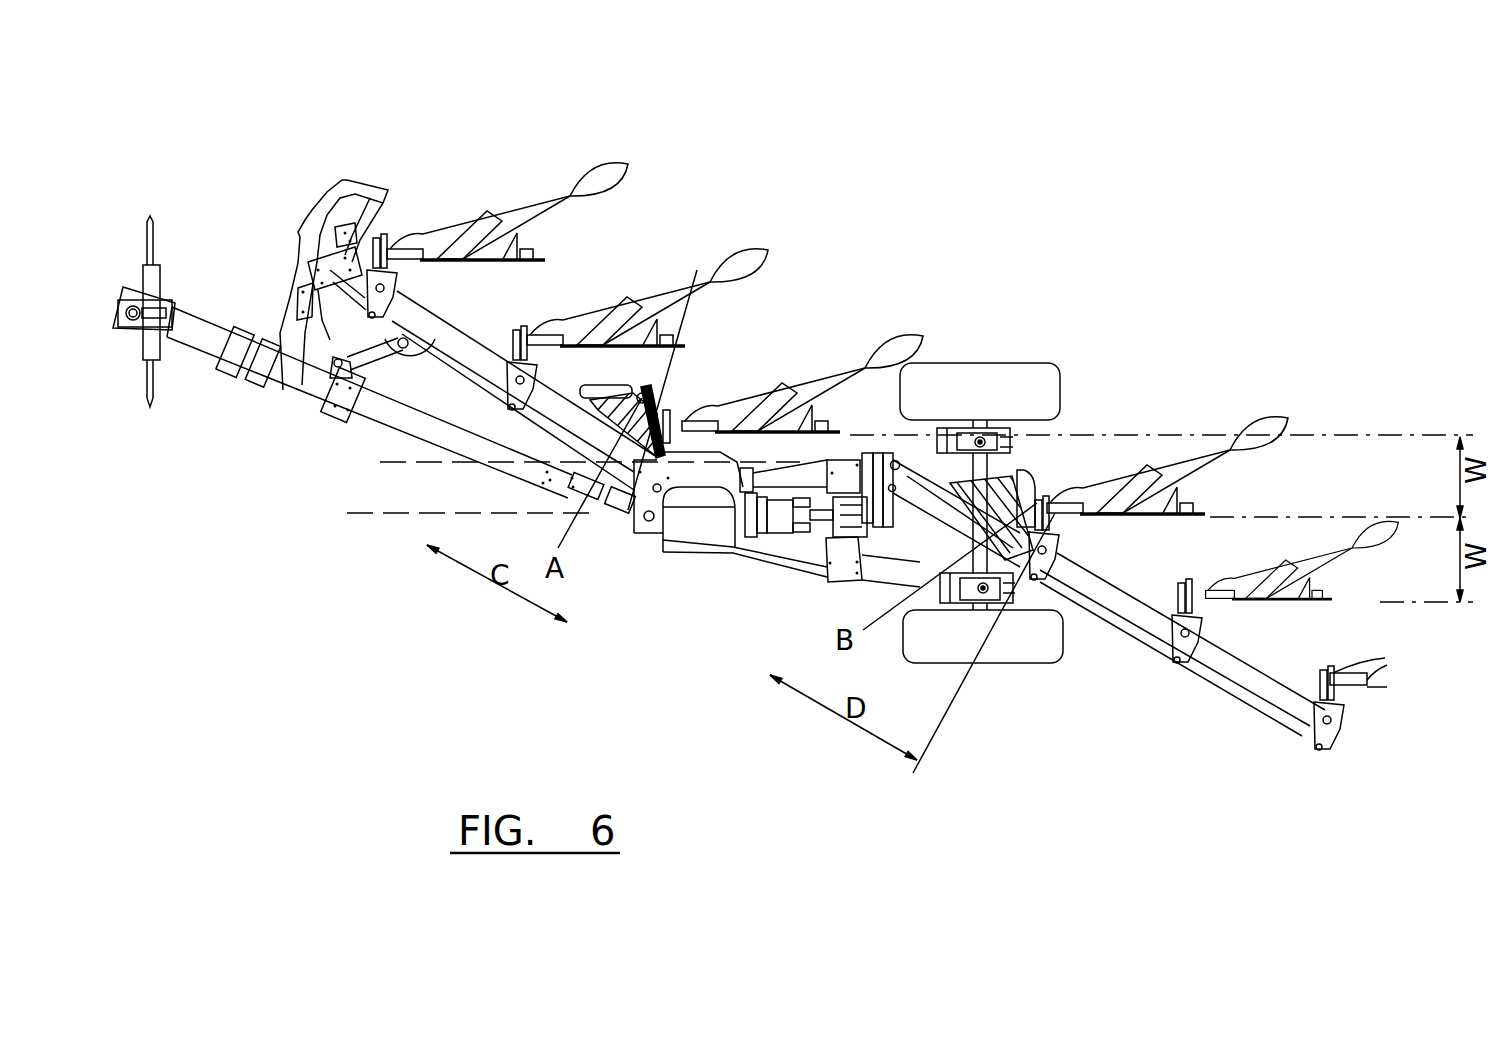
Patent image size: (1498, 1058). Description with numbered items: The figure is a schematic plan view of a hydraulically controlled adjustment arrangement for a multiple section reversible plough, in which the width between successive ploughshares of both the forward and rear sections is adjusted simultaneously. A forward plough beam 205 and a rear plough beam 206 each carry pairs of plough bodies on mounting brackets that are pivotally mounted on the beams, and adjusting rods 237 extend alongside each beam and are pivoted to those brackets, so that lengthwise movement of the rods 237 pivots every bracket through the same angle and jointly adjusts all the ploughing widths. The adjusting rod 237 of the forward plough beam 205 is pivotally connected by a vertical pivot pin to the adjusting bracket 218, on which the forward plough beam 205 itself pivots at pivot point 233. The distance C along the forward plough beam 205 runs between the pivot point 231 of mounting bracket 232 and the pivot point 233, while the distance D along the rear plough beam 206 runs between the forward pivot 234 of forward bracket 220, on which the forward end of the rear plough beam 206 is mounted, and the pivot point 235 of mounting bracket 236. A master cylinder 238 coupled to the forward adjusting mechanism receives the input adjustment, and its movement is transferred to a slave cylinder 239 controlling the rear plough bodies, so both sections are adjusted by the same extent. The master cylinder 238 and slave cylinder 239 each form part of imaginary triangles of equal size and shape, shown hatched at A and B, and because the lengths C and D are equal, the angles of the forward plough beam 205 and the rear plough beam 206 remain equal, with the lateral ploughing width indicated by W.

The forward plough beam 205 is at (457, 349).
The rear plough beam 206 is at (1140, 617).
The adjusting bracket 218 is at (703, 450).
The forward bracket 220 is at (900, 473).
The pivot point of mounting bracket 231 is at (512, 376).
The mounting bracket 232 is at (417, 557).
The pivot point of the plough beam 233 is at (563, 640).
The forward pivot 234 is at (770, 690).
The pivot point of mounting bracket 235 is at (1045, 572).
The mounting bracket 236 is at (1034, 575).
The adjusting rod 237 is at (460, 347).
The master cylinder 238 is at (622, 385).
The slave cylinder 239 is at (987, 472).